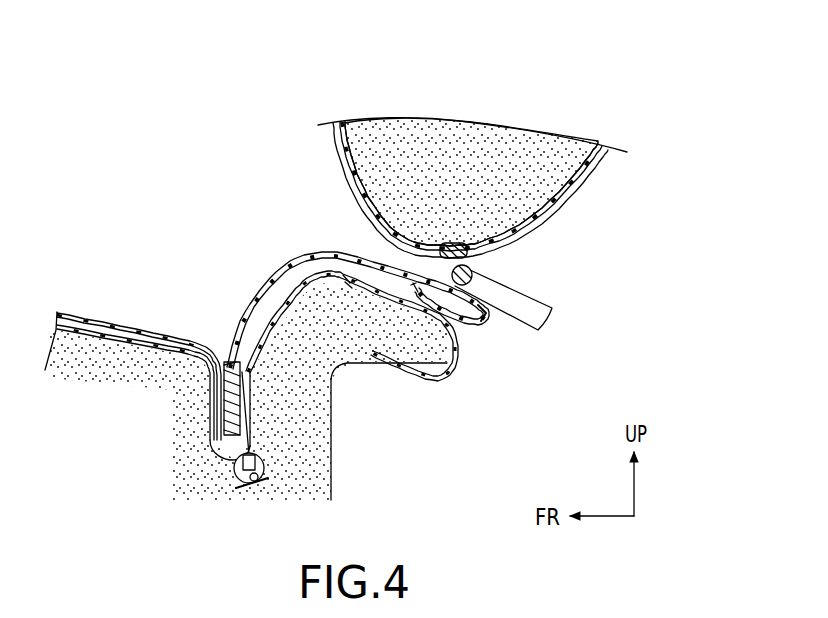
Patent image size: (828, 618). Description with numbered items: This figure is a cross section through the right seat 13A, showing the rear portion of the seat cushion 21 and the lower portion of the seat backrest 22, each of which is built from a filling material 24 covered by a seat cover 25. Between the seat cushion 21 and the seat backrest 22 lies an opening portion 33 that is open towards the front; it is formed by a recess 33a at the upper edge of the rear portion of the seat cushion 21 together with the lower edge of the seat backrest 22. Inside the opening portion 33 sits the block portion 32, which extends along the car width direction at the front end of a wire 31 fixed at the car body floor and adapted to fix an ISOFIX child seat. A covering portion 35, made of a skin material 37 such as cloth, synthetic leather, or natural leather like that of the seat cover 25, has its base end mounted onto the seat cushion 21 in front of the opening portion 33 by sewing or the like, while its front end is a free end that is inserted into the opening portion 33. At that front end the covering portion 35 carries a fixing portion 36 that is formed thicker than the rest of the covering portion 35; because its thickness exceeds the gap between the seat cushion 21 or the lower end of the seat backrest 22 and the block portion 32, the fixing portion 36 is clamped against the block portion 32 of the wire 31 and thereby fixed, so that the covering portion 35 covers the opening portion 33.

The right seat 13A is at (355, 260).
The seat cushion 21 is at (190, 359).
The seat backrest 22 is at (602, 184).
The filling material 24 is at (455, 140).
The seat cover 25 is at (335, 138).
The wire 31 is at (540, 294).
The block portion 32 is at (473, 279).
The opening portion 33 is at (382, 289).
The recess 33a is at (350, 281).
The covering portion 35 is at (265, 269).
The fixing portion 36 is at (474, 319).
The skin material 37 is at (250, 300).